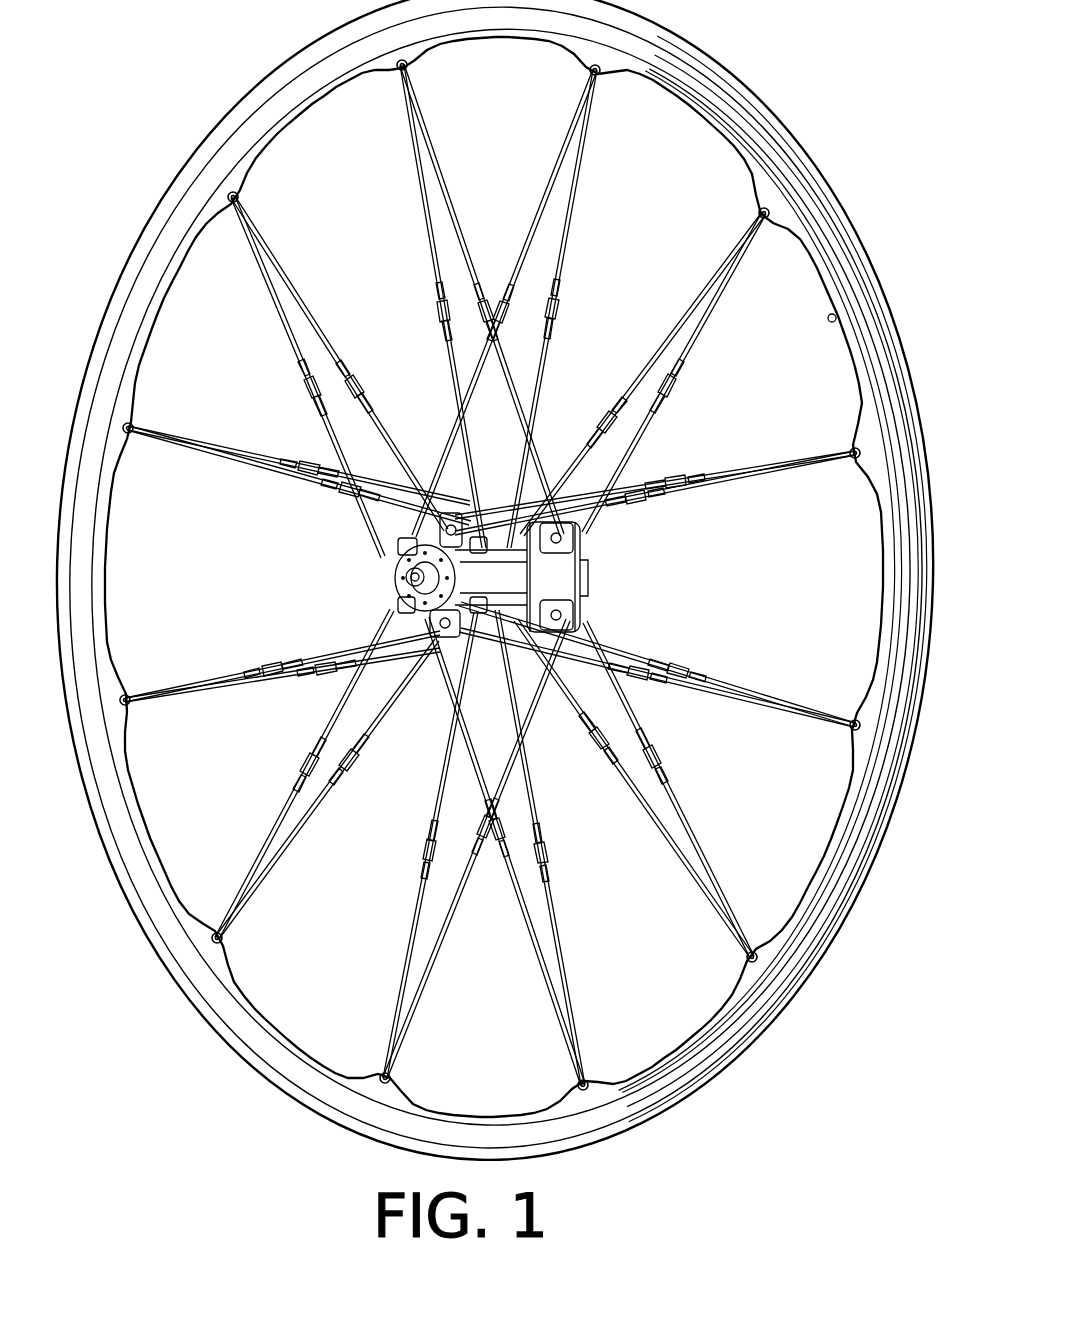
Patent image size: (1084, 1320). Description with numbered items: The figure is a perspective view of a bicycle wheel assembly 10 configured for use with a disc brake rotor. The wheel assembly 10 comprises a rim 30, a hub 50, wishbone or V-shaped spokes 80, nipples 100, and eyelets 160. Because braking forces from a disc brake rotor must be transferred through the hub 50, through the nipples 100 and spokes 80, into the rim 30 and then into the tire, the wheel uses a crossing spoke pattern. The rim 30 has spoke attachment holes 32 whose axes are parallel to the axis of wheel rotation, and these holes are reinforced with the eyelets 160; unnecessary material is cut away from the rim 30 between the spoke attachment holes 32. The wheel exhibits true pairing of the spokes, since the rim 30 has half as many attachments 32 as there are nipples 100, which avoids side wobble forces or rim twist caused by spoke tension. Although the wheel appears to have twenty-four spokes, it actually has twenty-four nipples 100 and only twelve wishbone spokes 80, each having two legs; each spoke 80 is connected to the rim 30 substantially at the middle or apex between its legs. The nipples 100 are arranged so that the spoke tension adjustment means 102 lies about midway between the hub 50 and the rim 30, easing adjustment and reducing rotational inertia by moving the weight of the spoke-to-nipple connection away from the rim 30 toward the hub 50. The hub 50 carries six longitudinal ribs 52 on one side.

The bicycle wheel assembly 10 is at (825, 168).
The rim 30 is at (760, 1040).
The spoke attachment holes 32 is at (600, 1095).
The hub 50 is at (522, 578).
The longitudinal ribs 52 is at (555, 603).
The wishbone or V-shaped spokes 80 is at (563, 952).
The nipples 100 is at (528, 777).
The spoke tension adjustment means 102 is at (428, 832).
The eyelets 160 is at (757, 957).